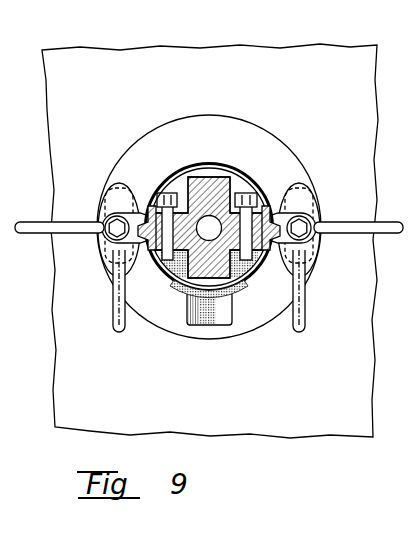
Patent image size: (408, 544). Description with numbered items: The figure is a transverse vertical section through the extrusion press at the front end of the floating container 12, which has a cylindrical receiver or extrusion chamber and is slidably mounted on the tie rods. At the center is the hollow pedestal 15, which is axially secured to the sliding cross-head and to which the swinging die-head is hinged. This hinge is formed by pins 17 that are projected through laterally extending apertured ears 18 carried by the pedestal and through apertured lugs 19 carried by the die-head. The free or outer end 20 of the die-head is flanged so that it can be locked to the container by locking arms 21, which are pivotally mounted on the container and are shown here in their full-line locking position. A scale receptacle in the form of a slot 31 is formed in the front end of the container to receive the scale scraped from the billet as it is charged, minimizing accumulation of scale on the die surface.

The floating container 12 is at (72, 126).
The hollow pedestal 15 is at (208, 178).
The pins 17 is at (170, 193).
The apertured ears 18 is at (267, 214).
The apertured lugs 19 is at (304, 269).
The free or outer end of die-head 20 is at (248, 287).
The locking arms 21 is at (289, 198).
The slot 31 is at (217, 318).